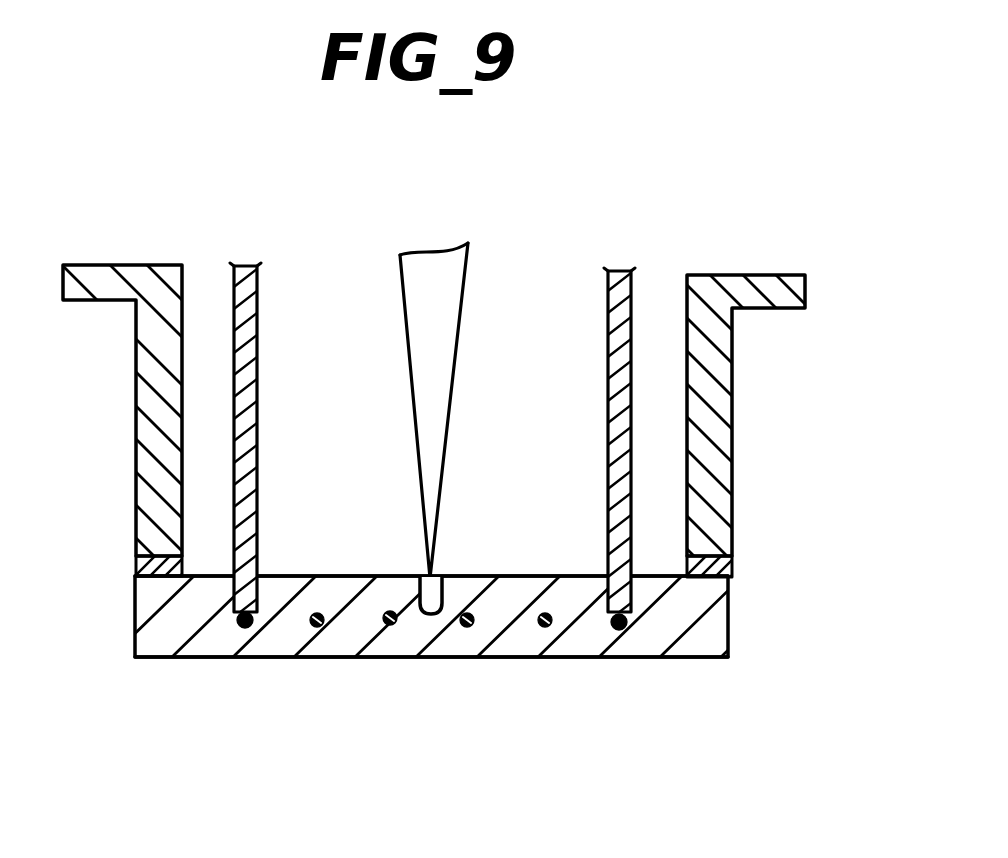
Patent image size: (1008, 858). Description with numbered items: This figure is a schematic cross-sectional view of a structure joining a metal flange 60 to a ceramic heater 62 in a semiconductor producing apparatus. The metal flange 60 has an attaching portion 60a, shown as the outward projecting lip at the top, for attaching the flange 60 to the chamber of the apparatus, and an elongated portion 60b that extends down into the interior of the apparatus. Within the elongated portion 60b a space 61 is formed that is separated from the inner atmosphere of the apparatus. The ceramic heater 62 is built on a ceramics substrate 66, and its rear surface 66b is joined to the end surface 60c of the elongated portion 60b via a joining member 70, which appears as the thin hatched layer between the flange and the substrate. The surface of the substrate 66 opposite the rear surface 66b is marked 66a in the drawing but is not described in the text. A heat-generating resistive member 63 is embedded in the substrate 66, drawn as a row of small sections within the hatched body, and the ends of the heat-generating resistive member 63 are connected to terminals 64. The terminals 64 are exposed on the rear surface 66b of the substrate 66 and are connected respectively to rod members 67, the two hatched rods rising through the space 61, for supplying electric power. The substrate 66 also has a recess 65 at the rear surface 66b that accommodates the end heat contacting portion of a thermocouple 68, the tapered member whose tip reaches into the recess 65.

The metal flange 60 is at (500, 478).
The attaching portion 60a is at (797, 292).
The elongated portion 60b is at (712, 402).
The end surface 60c is at (732, 536).
The space 61 is at (532, 443).
The ceramic heater 62 is at (742, 631).
The heat-generating resistive member 63 is at (394, 658).
The terminals 64 is at (237, 586).
The recess 65 is at (446, 592).
The ceramics substrate 66 is at (585, 643).
The substrate bottom surface 66a is at (318, 660).
The rear surface 66b is at (338, 575).
The rod members 67 is at (248, 391).
The thermocouple 68 is at (460, 363).
The joining member 70 is at (731, 571).